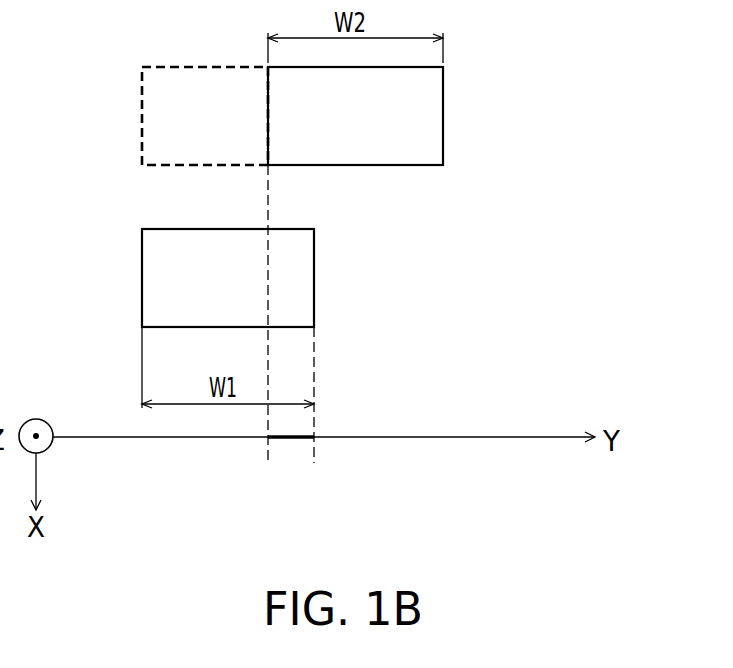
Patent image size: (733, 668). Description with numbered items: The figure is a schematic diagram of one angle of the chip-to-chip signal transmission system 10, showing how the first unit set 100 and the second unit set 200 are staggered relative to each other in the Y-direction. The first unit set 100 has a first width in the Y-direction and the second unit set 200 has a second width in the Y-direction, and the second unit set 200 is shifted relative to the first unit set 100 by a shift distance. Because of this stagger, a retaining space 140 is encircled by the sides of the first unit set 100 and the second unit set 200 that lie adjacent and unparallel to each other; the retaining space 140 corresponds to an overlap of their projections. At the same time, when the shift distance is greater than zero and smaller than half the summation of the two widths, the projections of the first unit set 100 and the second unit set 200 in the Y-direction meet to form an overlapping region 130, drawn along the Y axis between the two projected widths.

The display apparatus 10 is at (646, 607).
The first unit set 100 is at (152, 275).
The overlapping region 130 is at (314, 448).
The retaining space 140 is at (152, 113).
The second unit set 200 is at (413, 113).